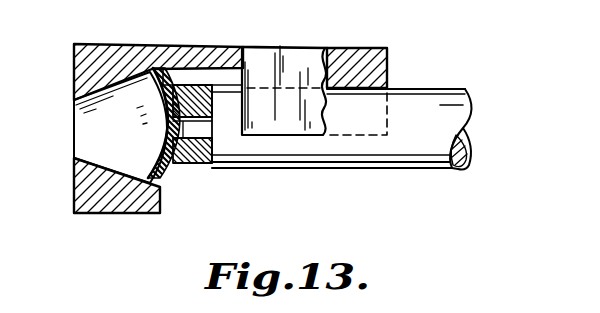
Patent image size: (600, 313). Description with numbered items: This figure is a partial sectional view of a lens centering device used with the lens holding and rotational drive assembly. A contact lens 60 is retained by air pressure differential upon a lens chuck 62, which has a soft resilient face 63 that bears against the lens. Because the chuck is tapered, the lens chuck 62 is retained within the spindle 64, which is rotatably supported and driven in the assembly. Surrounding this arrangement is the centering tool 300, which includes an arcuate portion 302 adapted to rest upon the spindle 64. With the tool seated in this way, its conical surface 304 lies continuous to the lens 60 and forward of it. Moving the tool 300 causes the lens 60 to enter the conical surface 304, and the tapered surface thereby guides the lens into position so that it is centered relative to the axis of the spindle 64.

The tool 300 is at (263, 47).
The arcuate portion 302 is at (373, 99).
The spindle 64 is at (450, 90).
The conical surface 304 is at (91, 160).
The contact lens 60 is at (148, 174).
The lens chuck 62 is at (196, 168).
The soft resilient face 63 is at (170, 165).